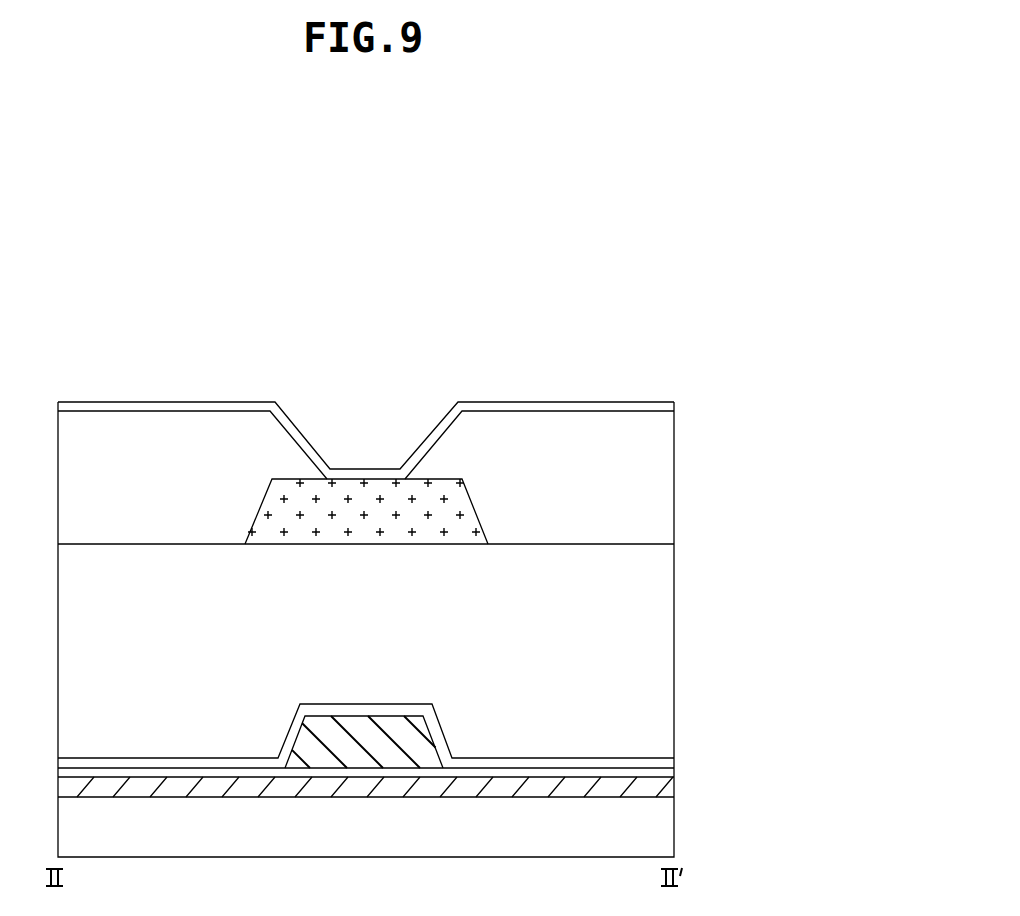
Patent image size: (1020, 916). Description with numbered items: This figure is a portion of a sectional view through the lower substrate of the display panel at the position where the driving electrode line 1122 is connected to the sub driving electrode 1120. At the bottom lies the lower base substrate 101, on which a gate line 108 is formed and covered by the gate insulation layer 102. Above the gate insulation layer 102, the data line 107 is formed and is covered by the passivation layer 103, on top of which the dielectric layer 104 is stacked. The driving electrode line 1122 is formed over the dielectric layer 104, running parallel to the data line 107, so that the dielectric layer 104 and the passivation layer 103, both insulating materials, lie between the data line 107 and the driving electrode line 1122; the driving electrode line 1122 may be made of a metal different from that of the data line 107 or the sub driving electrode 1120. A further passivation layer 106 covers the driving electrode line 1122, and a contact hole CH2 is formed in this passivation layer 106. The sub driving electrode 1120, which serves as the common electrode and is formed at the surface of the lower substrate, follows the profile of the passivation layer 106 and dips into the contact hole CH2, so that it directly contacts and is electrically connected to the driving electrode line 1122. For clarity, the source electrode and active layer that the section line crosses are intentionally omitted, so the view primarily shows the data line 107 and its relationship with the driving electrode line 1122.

The lower base substrate 101 is at (654, 845).
The gate line 108 is at (668, 790).
The gate insulation layer 102 is at (660, 775).
The passivation layer 103 is at (663, 765).
The data line 107 is at (412, 752).
The dielectric layer 104 is at (655, 657).
The driving electrode line 1122 is at (423, 534).
The passivation layer 106 is at (658, 456).
The sub driving electrode 1120 is at (562, 410).
The contact hole CH2 is at (368, 407).